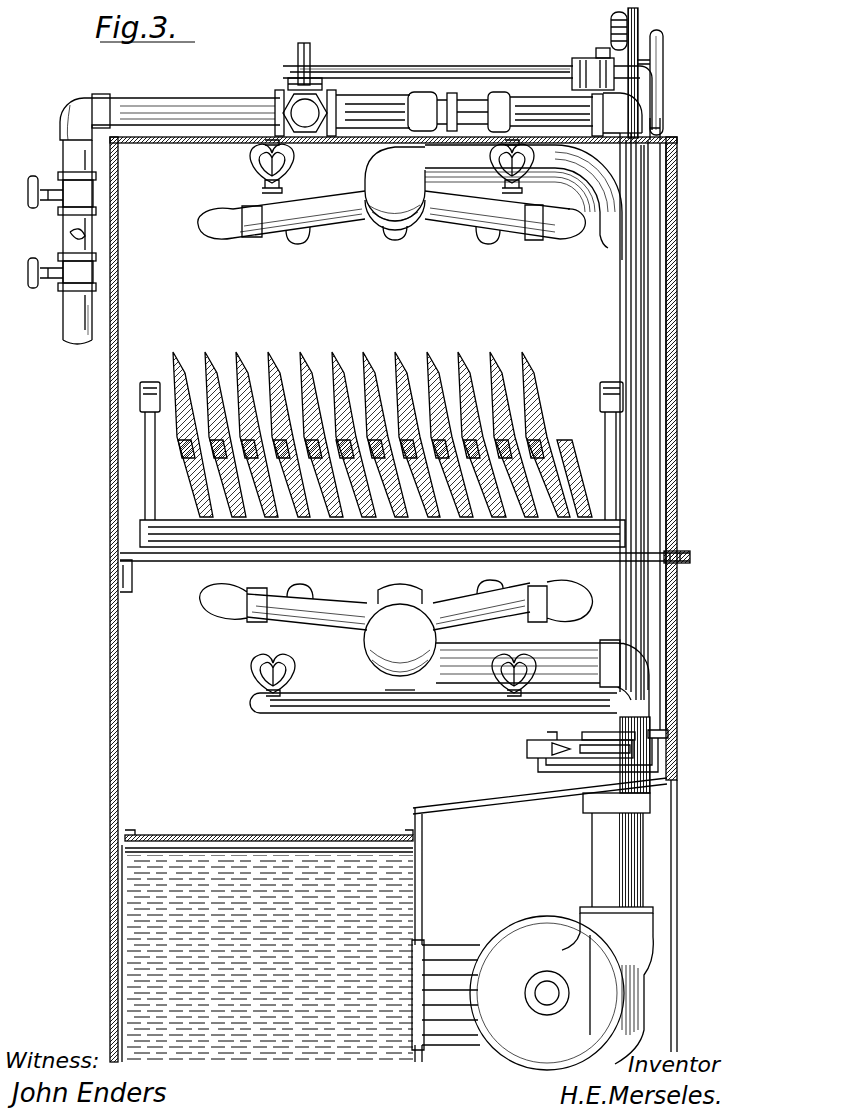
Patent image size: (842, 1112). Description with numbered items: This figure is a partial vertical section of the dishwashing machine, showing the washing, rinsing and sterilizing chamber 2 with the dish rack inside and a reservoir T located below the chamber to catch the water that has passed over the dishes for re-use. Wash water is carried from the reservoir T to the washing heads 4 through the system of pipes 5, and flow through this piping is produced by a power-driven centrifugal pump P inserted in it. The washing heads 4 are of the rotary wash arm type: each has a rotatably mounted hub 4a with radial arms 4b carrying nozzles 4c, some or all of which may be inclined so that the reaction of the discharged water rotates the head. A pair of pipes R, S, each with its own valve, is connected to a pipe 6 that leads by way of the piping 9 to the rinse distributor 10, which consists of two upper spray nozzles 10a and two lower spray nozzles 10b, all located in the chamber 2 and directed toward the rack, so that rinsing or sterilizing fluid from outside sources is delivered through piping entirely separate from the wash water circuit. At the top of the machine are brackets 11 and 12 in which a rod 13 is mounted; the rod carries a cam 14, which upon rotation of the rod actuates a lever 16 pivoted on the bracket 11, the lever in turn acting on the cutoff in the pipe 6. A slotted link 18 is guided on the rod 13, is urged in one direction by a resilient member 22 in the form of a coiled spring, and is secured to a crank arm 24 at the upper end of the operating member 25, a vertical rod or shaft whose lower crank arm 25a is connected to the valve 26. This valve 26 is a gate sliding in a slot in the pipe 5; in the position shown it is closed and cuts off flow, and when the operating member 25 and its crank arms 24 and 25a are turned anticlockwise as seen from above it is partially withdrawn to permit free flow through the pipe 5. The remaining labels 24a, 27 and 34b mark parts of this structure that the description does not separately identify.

The washing, rinsing and sterilizing chamber 2 is at (382, 438).
The washing heads 4 is at (338, 226).
The rotatably mounted hub 4a is at (390, 242).
The radial arms 4b is at (342, 204).
The nozzles 4c is at (220, 247).
The system of pipes 5 is at (612, 222).
The pipe 6 is at (178, 98).
The system of piping 9 is at (580, 104).
The rinse distributor 10 is at (246, 162).
The upper spray nozzles 10a is at (262, 187).
The lower spray nozzles 10b is at (250, 684).
The bracket 11 is at (275, 100).
The bracket 12 is at (638, 20).
The rod 13 is at (425, 66).
The cam 14 is at (310, 52).
The lever 16 is at (312, 78).
The link 18 is at (598, 54).
The resilient member 22 is at (612, 18).
The crank arm 24 is at (572, 66).
The lower central nozzle 24a is at (386, 600).
The operating member 25 is at (652, 320).
The crank arm 25a is at (540, 770).
The valve 26 is at (548, 742).
The lever handle 27 is at (664, 56).
The rack support bar 34b is at (440, 558).
The pipe R is at (72, 154).
The pipe S is at (72, 322).
The reservoir T is at (138, 922).
The centrifugal pump P is at (535, 930).